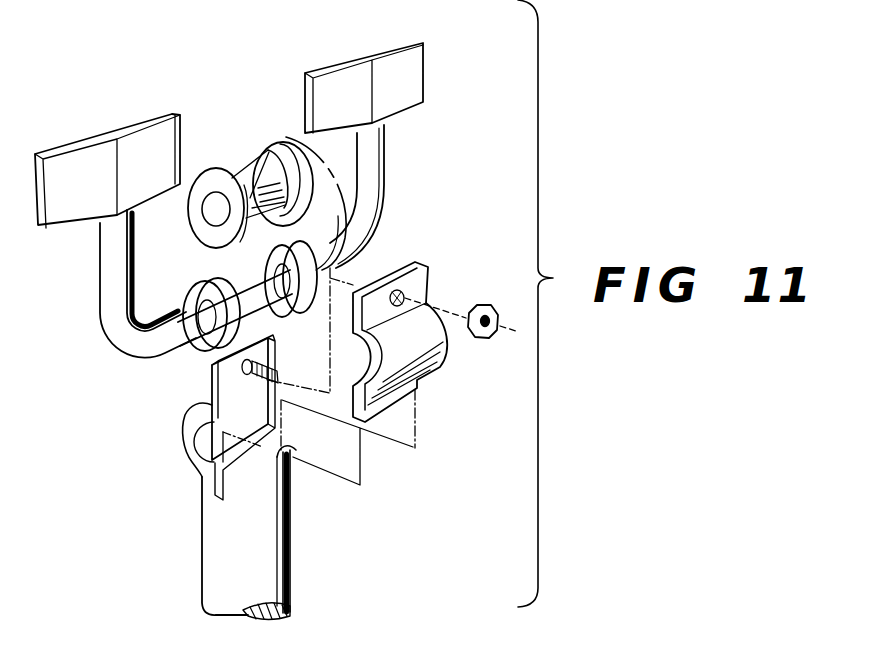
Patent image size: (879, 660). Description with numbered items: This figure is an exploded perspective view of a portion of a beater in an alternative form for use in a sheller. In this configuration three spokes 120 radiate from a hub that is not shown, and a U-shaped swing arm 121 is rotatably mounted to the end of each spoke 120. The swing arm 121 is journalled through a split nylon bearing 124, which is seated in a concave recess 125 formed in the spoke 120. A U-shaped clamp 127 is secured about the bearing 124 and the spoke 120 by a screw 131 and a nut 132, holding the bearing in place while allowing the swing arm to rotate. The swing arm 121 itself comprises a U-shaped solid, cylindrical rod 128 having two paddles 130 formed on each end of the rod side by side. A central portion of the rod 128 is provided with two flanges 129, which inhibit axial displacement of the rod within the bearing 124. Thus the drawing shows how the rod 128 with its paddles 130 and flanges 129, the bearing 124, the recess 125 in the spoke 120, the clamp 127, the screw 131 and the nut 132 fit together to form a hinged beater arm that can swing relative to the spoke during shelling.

The spoke 120 is at (206, 536).
The U-shaped swing arm 121 is at (268, 252).
The split nylon bearing 124 is at (200, 221).
The concave recess 125 is at (205, 433).
The U-shaped clamp 127 is at (427, 363).
The U-shaped solid cylindrical rod 128 is at (120, 340).
The flanges 129 is at (205, 347).
The paddles 130 is at (77, 220).
The screw 131 is at (270, 366).
The nut 132 is at (483, 306).